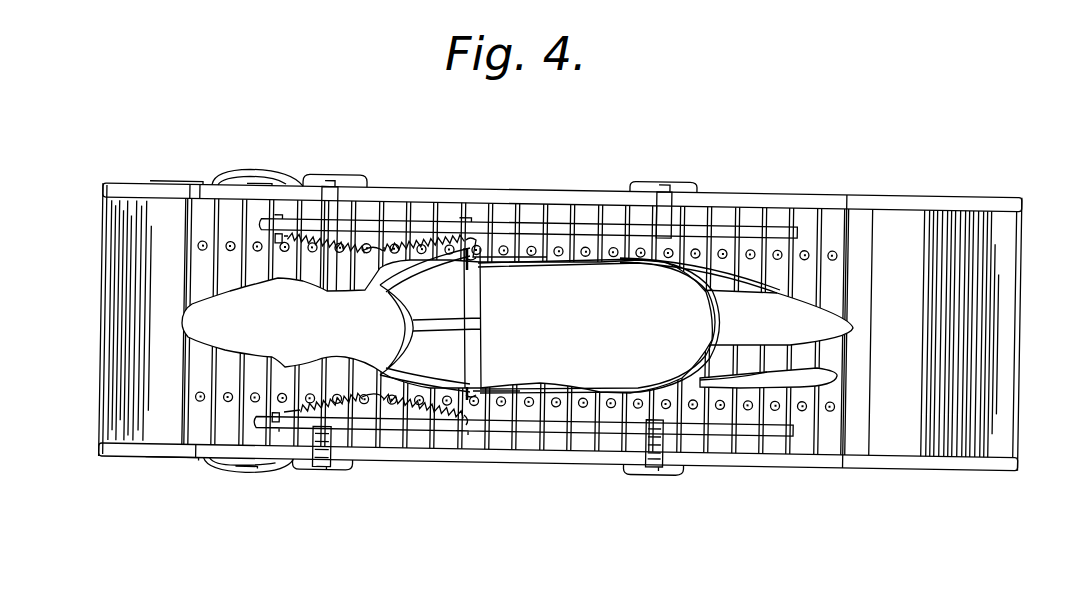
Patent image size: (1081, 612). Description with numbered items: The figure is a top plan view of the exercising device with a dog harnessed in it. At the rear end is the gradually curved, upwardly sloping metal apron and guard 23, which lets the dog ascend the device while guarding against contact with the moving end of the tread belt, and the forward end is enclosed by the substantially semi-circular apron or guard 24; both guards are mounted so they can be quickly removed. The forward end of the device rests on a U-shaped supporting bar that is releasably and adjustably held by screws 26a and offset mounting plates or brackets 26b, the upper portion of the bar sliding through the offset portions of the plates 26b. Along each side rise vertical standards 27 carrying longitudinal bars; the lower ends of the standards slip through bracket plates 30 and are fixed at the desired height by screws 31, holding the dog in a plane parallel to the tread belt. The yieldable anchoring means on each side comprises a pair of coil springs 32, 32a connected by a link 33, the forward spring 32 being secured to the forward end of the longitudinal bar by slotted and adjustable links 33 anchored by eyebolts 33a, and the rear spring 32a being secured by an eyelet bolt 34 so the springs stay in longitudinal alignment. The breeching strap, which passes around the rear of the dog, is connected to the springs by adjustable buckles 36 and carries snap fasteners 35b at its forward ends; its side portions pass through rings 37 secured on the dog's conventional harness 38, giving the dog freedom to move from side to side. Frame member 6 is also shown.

The side rail 6 is at (216, 185).
The metal apron and guard 23 is at (1012, 357).
The semi-circular apron or guard 24 is at (108, 355).
The screws 26a is at (243, 177).
The offset mounting plates or brackets 26b is at (297, 158).
The vertical standards 27 is at (658, 190).
The bracket plates 30 is at (680, 176).
The screws 31 is at (333, 180).
The coil spring 32 is at (313, 294).
The coil spring 32a is at (410, 243).
The slotted and adjustable links 33 is at (371, 216).
The eyebolts 33a is at (278, 238).
The eyelet bolt 34 is at (465, 422).
The snap fasteners 35b is at (380, 290).
The adjustable buckles 36 is at (474, 268).
The rings 37 is at (480, 268).
The conventional harness 38 is at (465, 302).